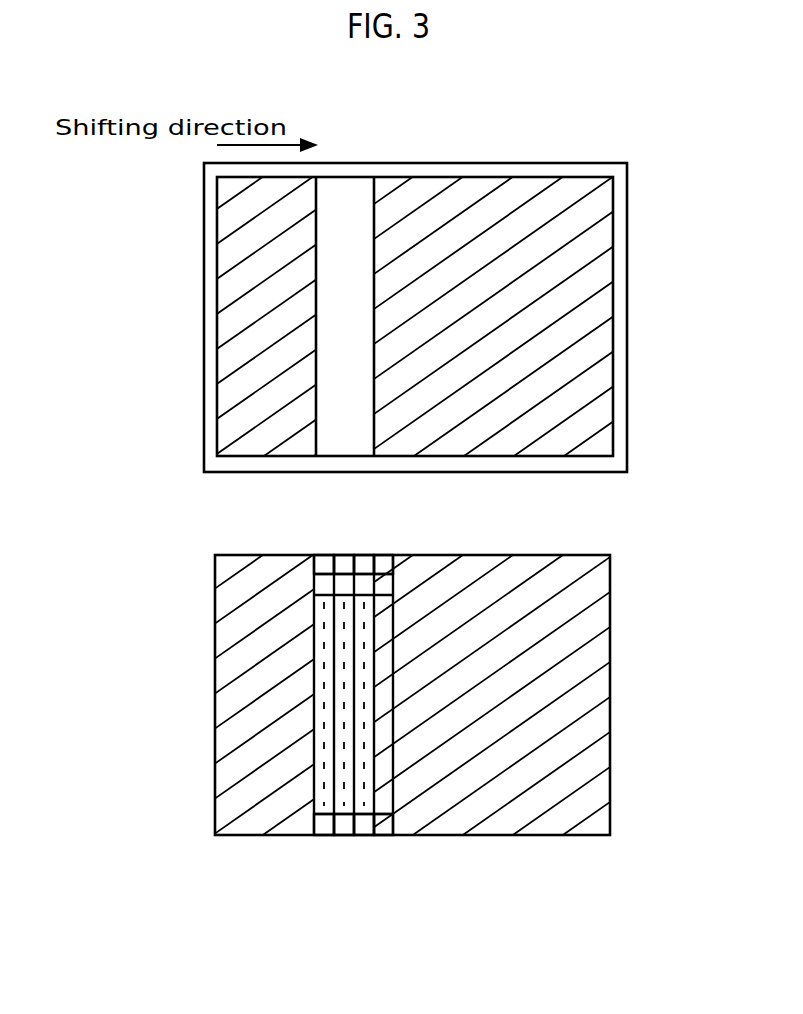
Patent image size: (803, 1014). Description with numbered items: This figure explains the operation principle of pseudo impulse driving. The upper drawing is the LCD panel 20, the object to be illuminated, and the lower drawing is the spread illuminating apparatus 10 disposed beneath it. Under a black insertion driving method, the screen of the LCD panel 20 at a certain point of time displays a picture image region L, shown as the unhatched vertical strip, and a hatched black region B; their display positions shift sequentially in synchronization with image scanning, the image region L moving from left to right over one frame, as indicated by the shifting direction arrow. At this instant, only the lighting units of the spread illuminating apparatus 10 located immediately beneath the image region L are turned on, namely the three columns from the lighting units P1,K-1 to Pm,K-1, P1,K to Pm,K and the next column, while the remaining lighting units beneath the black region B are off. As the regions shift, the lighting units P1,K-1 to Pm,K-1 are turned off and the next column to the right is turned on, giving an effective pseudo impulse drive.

The LCD panel 20 is at (627, 263).
The spread illuminating apparatus 10 is at (610, 748).
The picture image region L is at (345, 187).
The black region B is at (474, 190).
The lighting unit P1,K-1 is at (325, 558).
The lighting unit P1,K is at (345, 558).
The lighting unit Pm,K-1 is at (322, 835).
The lighting unit Pm,K is at (343, 835).